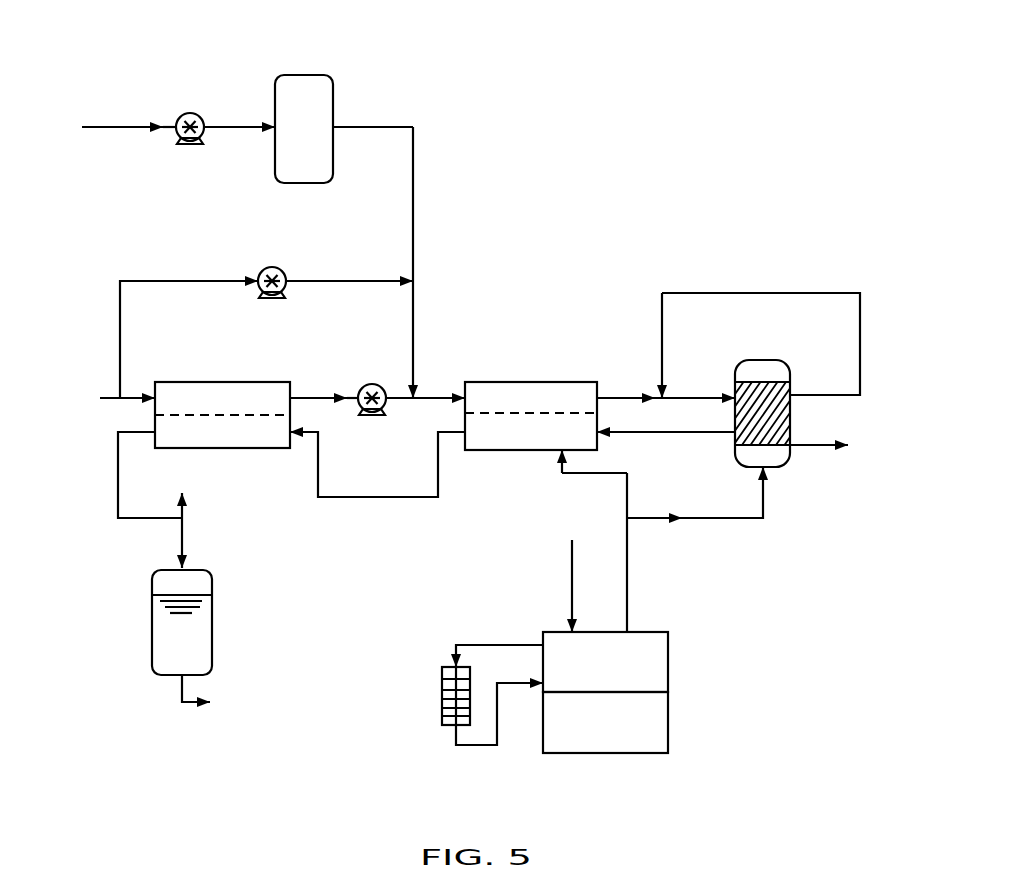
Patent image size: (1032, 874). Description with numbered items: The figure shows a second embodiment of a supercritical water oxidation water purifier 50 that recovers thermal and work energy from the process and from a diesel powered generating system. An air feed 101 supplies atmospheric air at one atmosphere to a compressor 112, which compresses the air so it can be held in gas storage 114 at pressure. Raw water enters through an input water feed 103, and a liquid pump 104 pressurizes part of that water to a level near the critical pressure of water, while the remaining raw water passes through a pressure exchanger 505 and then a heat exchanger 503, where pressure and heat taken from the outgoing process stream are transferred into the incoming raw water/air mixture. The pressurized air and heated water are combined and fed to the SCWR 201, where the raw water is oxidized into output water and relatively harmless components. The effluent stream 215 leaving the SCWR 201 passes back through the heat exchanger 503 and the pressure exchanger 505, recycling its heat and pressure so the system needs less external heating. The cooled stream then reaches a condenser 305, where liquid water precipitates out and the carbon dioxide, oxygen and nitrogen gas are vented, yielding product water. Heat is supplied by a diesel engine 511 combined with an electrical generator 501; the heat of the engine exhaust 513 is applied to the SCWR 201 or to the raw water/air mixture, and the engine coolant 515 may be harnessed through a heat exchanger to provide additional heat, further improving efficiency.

The SCWO water purifier 50 is at (622, 107).
The air feed 101 is at (110, 131).
The compressor 112 is at (188, 113).
The gas storage 114 is at (302, 74).
The liquid pump 104 is at (283, 271).
The input water feed 103 is at (103, 403).
The pressure exchanger 505 is at (212, 382).
The heat exchanger 503 is at (580, 382).
The condenser 305 is at (184, 515).
The SCWR 201 is at (781, 465).
The effluent stream 215 is at (705, 433).
The exhaust 513 is at (740, 519).
The diesel engine 511 is at (670, 658).
The electrical generator 501 is at (670, 722).
The engine coolant 515 is at (470, 677).